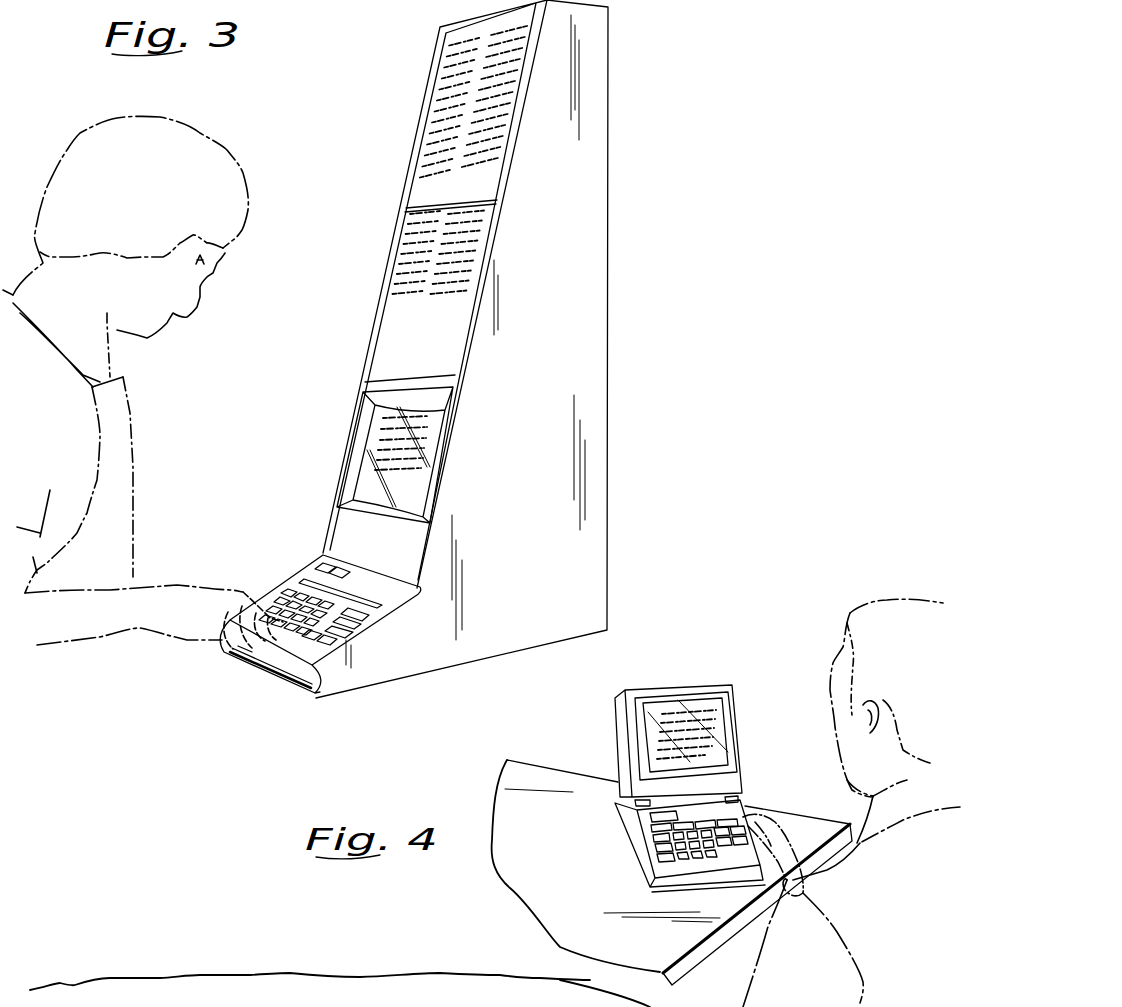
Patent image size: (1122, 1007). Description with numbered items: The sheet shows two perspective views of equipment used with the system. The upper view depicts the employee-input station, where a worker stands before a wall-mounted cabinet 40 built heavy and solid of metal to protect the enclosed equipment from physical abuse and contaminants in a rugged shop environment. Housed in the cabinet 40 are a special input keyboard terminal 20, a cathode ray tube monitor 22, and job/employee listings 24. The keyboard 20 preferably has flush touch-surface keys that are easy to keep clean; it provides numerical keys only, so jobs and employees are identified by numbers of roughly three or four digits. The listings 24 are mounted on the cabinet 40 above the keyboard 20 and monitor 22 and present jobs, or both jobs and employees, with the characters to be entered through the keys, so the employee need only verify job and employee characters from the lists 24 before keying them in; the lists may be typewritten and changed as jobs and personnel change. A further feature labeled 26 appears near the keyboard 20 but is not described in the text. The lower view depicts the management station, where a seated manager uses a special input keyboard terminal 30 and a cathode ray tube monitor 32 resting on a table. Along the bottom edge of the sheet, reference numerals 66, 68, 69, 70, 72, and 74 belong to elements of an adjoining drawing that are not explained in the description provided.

In FIG. 3, the special input keyboard terminal 20 is at (283, 660).
In FIG. 3, the cathode ray tube monitor 22 is at (380, 467).
In FIG. 3, the job/employee listings 24 is at (392, 336).
In FIG. 3, the card slot 26 is at (237, 658).
In FIG. 3, the wall-mounted cabinet 40 is at (570, 178).
In FIG. 4, the special input keyboard terminal 30 is at (643, 857).
In FIG. 4, the cathode ray tube monitor 32 is at (733, 737).
In FIG. 4, the component 66 is at (139, 996).
In FIG. 4, the component 68 is at (218, 996).
In FIG. 4, the component 69 is at (285, 996).
In FIG. 4, the component 70 is at (420, 996).
In FIG. 4, the component 72 is at (486, 996).
In FIG. 4, the component 74 is at (548, 996).